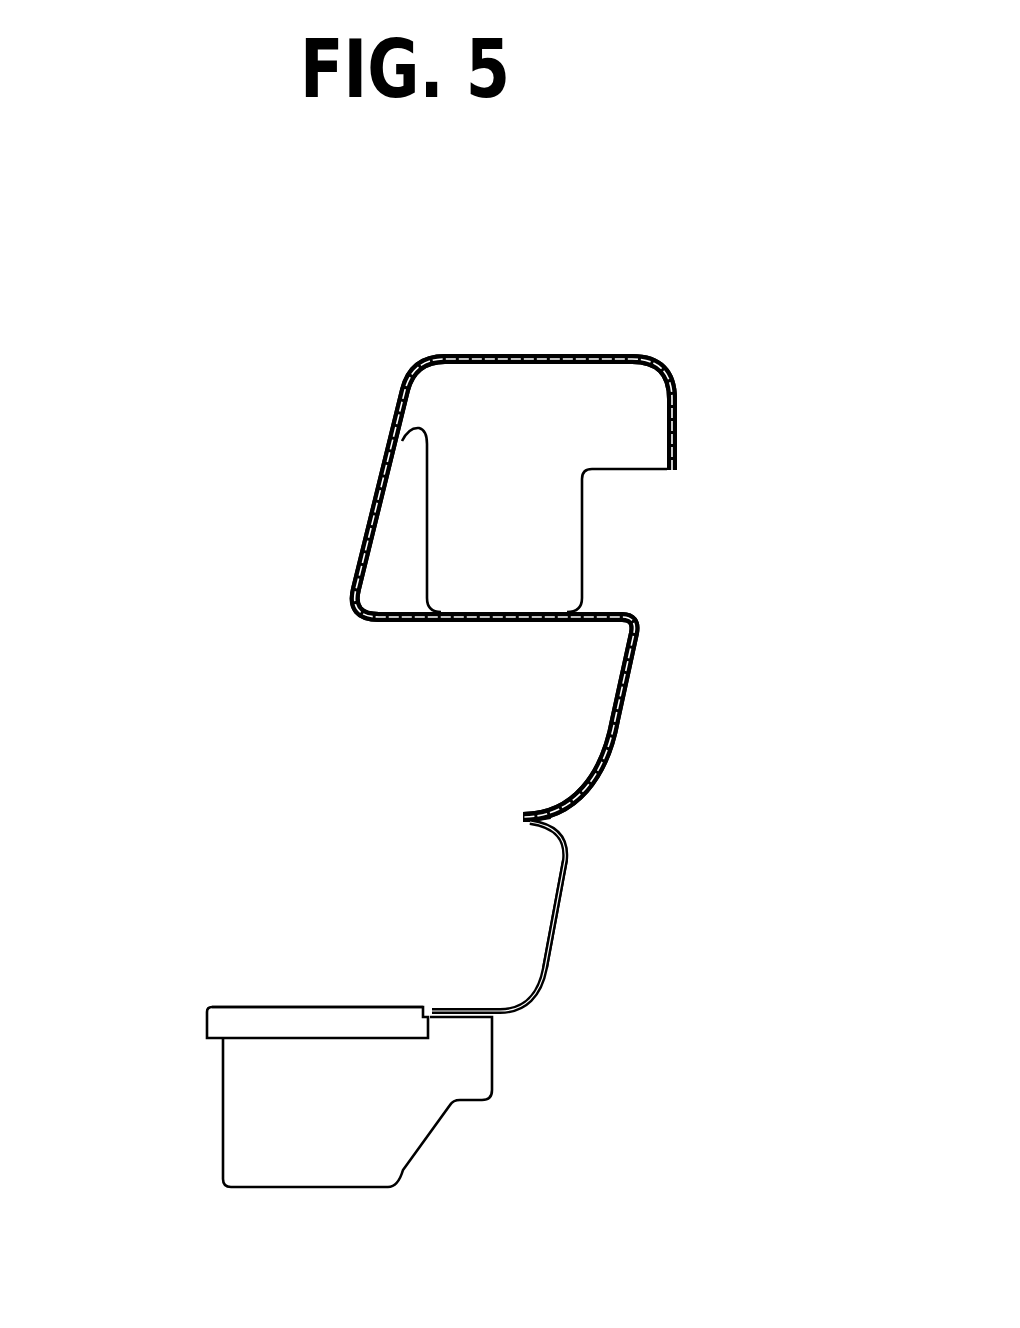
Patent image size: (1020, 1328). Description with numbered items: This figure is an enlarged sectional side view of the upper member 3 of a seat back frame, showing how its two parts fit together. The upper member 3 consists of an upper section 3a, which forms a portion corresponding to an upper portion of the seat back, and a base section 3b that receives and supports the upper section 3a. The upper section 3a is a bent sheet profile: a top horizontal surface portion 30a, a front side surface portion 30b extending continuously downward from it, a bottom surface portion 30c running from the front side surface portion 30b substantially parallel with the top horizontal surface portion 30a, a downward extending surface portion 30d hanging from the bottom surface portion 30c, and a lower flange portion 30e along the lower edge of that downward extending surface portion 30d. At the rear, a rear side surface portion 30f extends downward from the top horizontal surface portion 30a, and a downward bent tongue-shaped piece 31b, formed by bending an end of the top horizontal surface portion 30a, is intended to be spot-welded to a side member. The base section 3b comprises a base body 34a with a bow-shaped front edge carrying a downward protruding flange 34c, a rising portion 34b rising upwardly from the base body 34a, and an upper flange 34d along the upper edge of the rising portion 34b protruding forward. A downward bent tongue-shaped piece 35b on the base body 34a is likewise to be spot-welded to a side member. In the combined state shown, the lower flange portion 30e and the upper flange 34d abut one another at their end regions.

The upper member 3 is at (83, 355).
The upper section 3a is at (415, 357).
The base section 3b is at (567, 917).
The top horizontal surface portion 30a is at (534, 354).
The front side surface portion 30b is at (383, 463).
The bottom surface portion 30c is at (493, 623).
The downward extending surface portion 30d is at (613, 710).
The lower flange portion 30e is at (523, 814).
The rear side surface portion 30f is at (677, 420).
The tongue-shaped piece 31b is at (545, 536).
The base body 34a is at (288, 1005).
The rising portion 34b is at (543, 927).
The downward protruding flange 34c is at (267, 1023).
The upper flange 34d is at (530, 826).
The tongue-shaped piece 35b is at (470, 1065).